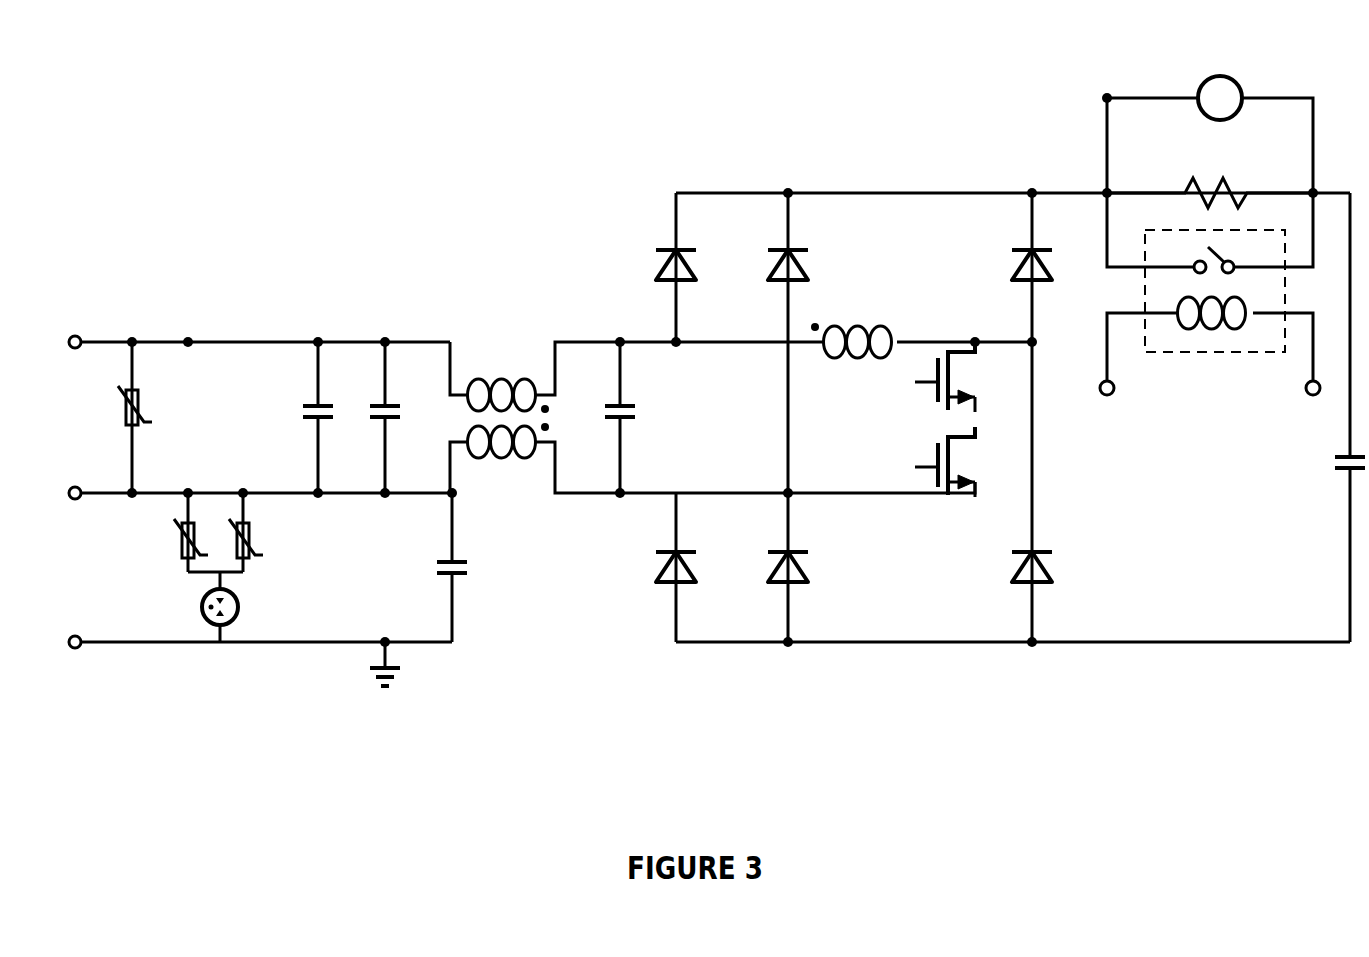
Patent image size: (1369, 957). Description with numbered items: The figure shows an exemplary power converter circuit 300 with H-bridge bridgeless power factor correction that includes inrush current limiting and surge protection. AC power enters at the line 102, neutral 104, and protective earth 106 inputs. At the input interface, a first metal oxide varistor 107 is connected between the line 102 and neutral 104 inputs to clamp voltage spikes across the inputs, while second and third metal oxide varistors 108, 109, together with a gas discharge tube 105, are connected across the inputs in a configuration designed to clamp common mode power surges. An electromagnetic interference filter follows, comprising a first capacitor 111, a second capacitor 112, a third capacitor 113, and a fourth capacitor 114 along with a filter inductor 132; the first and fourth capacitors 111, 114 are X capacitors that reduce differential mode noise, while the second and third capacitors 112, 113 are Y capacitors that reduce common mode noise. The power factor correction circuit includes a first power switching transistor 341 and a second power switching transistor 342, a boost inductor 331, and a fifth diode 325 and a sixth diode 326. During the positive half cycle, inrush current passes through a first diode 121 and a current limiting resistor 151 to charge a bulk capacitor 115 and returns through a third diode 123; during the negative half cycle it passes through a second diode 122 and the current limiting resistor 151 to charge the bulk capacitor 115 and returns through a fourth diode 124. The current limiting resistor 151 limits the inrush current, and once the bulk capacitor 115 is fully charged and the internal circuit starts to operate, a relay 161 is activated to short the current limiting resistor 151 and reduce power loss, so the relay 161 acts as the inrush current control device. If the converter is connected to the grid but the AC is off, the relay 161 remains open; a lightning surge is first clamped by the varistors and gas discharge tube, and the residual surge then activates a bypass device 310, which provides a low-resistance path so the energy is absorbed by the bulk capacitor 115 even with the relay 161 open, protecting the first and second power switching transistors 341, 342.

The power converter circuit 300 is at (513, 112).
The line 102 is at (244, 338).
The neutral 104 is at (244, 489).
The protective earth 106 is at (243, 639).
The metal oxide varistor MOV1 107 is at (115, 417).
The metal oxide varistor MOV2 108 is at (169, 535).
The metal oxide varistor MOV3 109 is at (264, 535).
The gas discharge tube GDT1 105 is at (229, 607).
The capacitor C1 111 is at (308, 417).
The capacitor C2 112 is at (375, 417).
The capacitor C3 113 is at (440, 567).
The inductor L2 132 is at (610, 417).
The capacitor C4 114 is at (609, 417).
The diode D1 121 is at (668, 267).
The diode D2 122 is at (780, 267).
The diode D3 123 is at (780, 492).
The diode D4 124 is at (668, 567).
The diode D5 325 is at (1023, 267).
The diode D6 326 is at (1023, 492).
The inductor L1 331 is at (858, 344).
The power switching transistor Q1 341 is at (937, 377).
The power switching transistor Q2 342 is at (883, 462).
The bypass device BD1 310 is at (1210, 134).
The current limiting resistor R1 151 is at (1210, 189).
The relay K1 161 is at (1210, 294).
The bulk capacitor C5 115 is at (1340, 417).